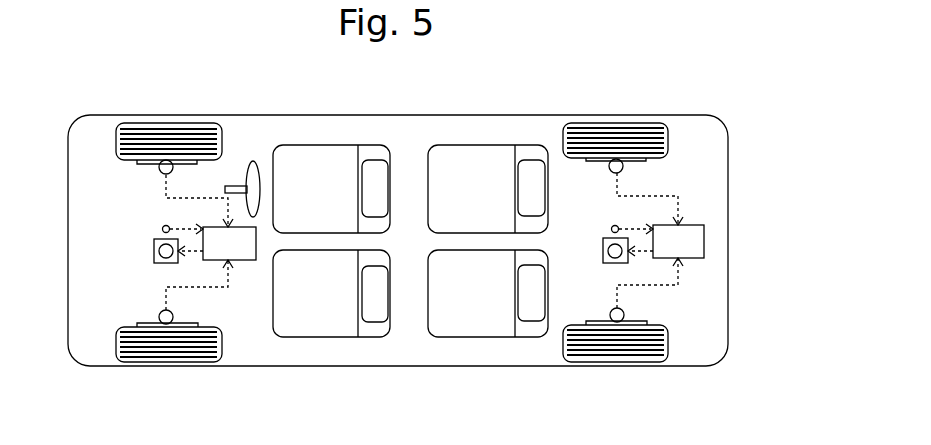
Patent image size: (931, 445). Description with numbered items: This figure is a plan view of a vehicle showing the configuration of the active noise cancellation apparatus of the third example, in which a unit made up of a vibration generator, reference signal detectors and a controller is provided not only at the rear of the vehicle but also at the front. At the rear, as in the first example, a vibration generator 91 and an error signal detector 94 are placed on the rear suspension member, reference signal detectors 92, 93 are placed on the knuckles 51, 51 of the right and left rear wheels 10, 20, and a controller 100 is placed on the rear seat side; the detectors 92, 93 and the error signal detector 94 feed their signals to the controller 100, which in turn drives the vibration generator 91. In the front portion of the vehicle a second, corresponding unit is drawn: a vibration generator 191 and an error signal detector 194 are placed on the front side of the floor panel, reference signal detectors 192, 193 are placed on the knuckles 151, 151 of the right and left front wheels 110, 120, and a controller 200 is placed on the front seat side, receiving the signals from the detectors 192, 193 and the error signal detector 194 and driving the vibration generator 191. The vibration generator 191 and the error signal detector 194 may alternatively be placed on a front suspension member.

The right rear wheel 10 is at (617, 123).
The left rear wheel 20 is at (627, 362).
The knuckle 51 is at (645, 164).
The vibration generator 91 is at (617, 254).
The reference signal detector 92 is at (609, 168).
The reference signal detector 93 is at (609, 312).
The error signal detector 94 is at (617, 226).
The controller 100 is at (704, 245).
The right front wheel 110 is at (178, 123).
The left front wheel 120 is at (182, 362).
The knuckle 151 is at (192, 166).
The vibration generator 191 is at (166, 253).
The reference signal detector 192 is at (159, 170).
The reference signal detector 193 is at (159, 313).
The error signal detector 194 is at (164, 226).
The controller 200 is at (245, 261).